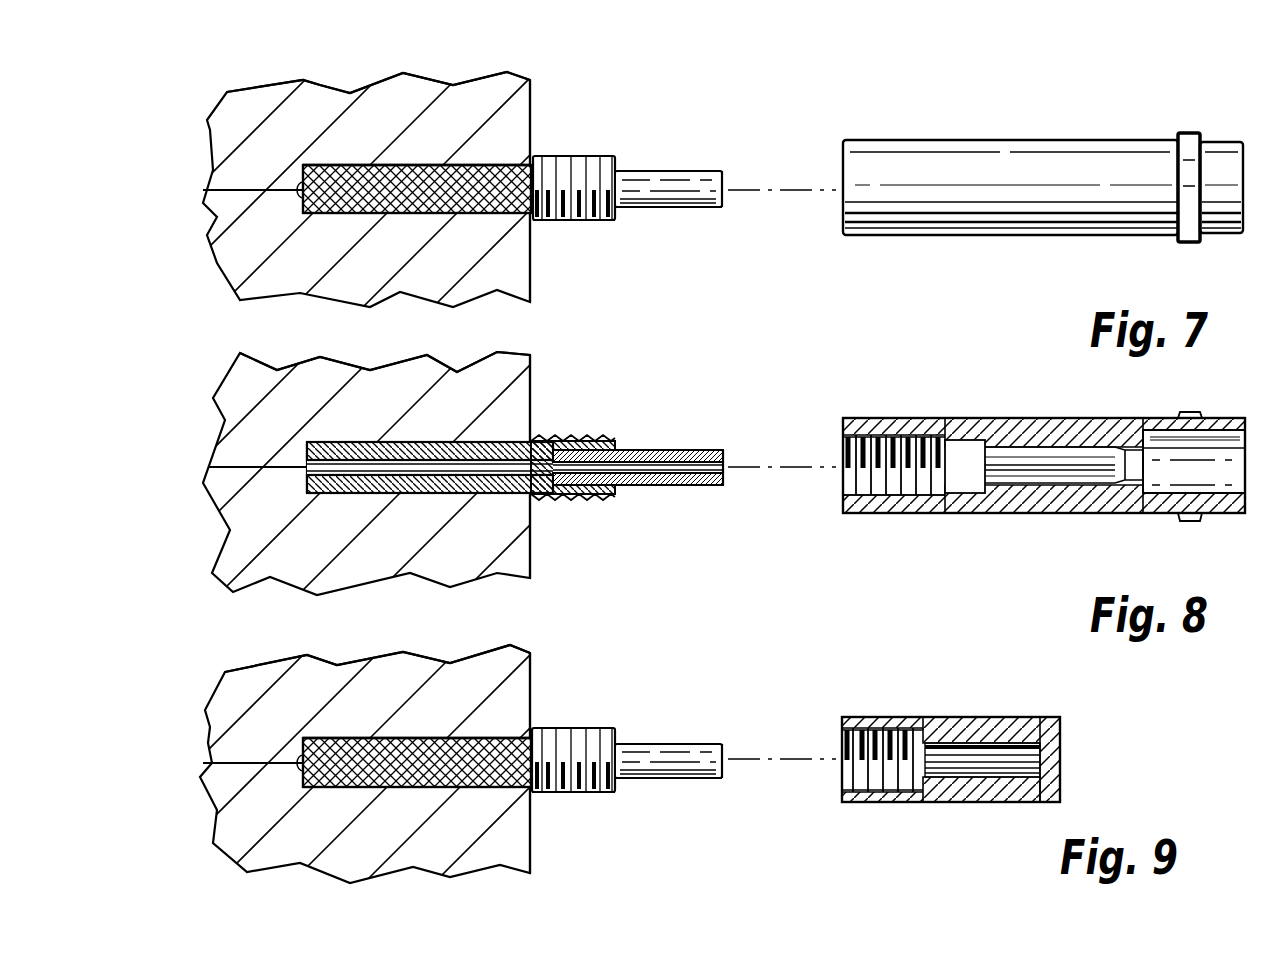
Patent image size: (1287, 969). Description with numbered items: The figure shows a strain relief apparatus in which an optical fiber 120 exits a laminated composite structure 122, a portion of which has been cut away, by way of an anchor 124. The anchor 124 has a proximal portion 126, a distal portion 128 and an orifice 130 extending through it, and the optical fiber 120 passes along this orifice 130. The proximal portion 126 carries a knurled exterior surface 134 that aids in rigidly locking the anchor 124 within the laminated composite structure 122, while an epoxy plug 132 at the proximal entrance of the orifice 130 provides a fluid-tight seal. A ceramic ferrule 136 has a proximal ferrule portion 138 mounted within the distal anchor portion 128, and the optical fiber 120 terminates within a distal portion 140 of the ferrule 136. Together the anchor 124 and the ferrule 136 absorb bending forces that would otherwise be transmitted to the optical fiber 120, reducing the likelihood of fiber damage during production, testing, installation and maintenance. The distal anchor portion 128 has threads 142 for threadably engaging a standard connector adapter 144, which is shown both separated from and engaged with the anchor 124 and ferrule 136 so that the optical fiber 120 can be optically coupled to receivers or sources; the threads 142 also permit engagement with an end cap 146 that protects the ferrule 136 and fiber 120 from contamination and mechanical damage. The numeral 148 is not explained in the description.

In FIG. 7, the optical fiber 120 is at (243, 188).
In FIG. 8, the optical fiber 120 is at (238, 462).
In FIG. 9, the optical fiber 120 is at (230, 762).
In FIG. 7, the laminated composite structure 122 is at (303, 100).
In FIG. 8, the laminated composite structure 122 is at (297, 390).
In FIG. 9, the laminated composite structure 122 is at (278, 692).
In FIG. 7, the anchor 124 is at (505, 136).
In FIG. 8, the anchor 124 is at (458, 413).
In FIG. 9, the anchor 124 is at (472, 718).
In FIG. 7, the proximal portion 126 is at (457, 162).
In FIG. 8, the proximal portion 126 is at (407, 438).
In FIG. 9, the proximal portion 126 is at (438, 737).
In FIG. 7, the distal portion 128 is at (580, 150).
In FIG. 8, the distal portion 128 is at (586, 436).
In FIG. 9, the distal portion 128 is at (562, 724).
In FIG. 8, the orifice 130 is at (355, 474).
In FIG. 7, the epoxy plug 132 is at (296, 205).
In FIG. 8, the epoxy plug 132 is at (305, 478).
In FIG. 9, the epoxy plug 132 is at (300, 780).
In FIG. 7, the knurled exterior surface 134 is at (347, 164).
In FIG. 9, the knurled exterior surface 134 is at (337, 752).
In FIG. 7, the ceramic ferrule 136 is at (680, 163).
In FIG. 8, the ceramic ferrule 136 is at (648, 446).
In FIG. 9, the ceramic ferrule 136 is at (647, 741).
In FIG. 8, the proximal ferrule portion 138 is at (585, 489).
In FIG. 7, the distal portion 140 is at (670, 210).
In FIG. 8, the distal portion 140 is at (707, 486).
In FIG. 9, the distal portion 140 is at (632, 781).
In FIG. 7, the threads 142 is at (553, 223).
In FIG. 8, the threads 142 is at (600, 497).
In FIG. 9, the threads 142 is at (552, 795).
In FIG. 7, the connector adapter 144 is at (1005, 133).
In FIG. 8, the connector adapter 144 is at (990, 414).
In FIG. 9, the end cap 146 is at (938, 715).
In FIG. 7, the pin tip 148 is at (727, 182).
In FIG. 8, the pin tip 148 is at (725, 463).
In FIG. 9, the pin tip 148 is at (728, 757).